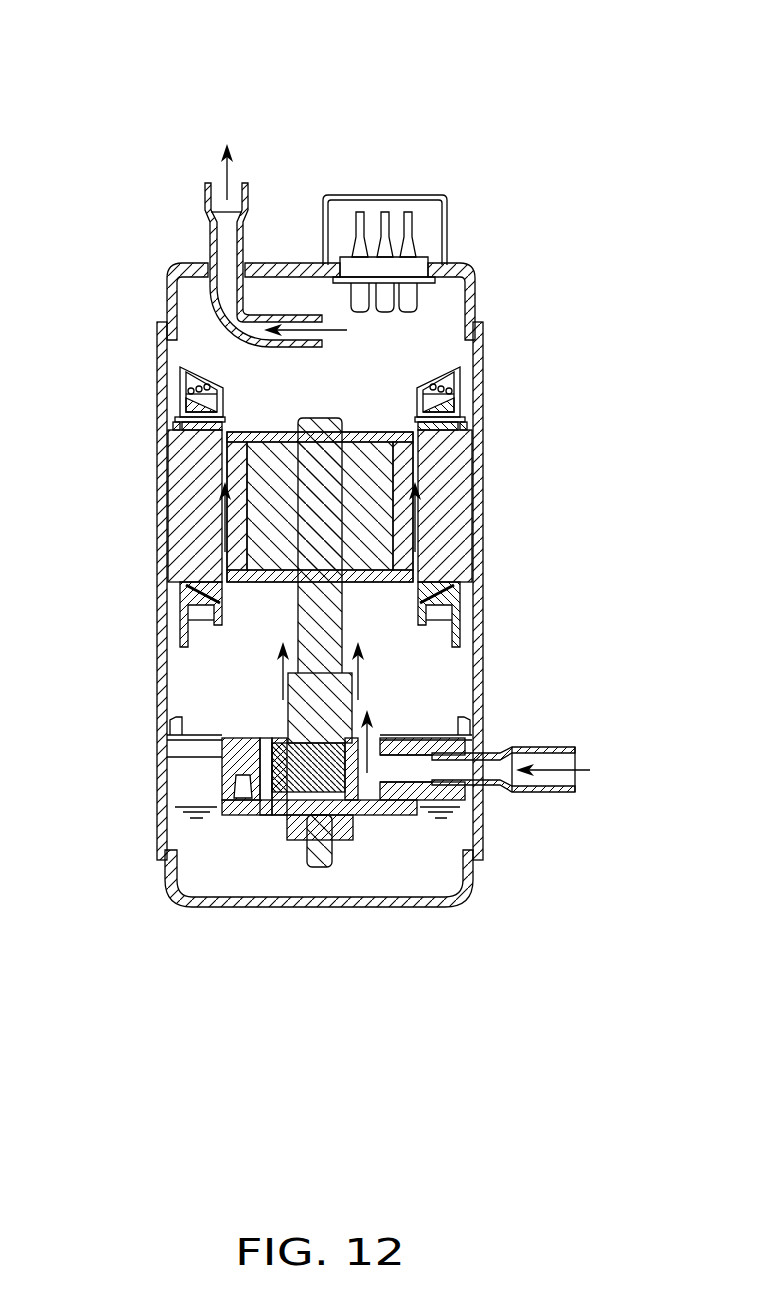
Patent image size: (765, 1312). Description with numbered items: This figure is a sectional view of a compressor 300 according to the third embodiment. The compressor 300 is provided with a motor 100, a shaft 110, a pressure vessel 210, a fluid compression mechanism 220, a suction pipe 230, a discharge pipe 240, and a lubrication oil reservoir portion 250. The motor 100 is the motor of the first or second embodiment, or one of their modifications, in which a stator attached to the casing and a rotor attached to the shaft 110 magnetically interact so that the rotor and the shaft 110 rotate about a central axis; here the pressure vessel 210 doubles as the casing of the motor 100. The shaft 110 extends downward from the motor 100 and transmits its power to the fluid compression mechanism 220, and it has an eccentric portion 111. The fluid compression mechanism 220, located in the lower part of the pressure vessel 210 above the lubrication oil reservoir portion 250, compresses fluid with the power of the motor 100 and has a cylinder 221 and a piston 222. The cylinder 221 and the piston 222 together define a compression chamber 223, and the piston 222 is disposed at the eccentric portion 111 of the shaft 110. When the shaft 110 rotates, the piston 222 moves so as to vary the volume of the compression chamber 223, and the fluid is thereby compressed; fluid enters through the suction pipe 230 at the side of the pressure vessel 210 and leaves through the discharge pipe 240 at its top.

The compressor 300 is at (193, 90).
The pressure vessel 210 is at (160, 323).
The cylinder 221 is at (482, 845).
The discharge pipe 240 is at (243, 243).
The motor 100 is at (193, 505).
The shaft 110 is at (327, 607).
The eccentric portion 111 is at (255, 757).
The compression chamber 223 is at (368, 790).
The piston 222 is at (283, 800).
The suction pipe 230 is at (542, 792).
The fluid compression mechanism 220 is at (208, 778).
The lubrication oil reservoir portion 250 is at (430, 883).